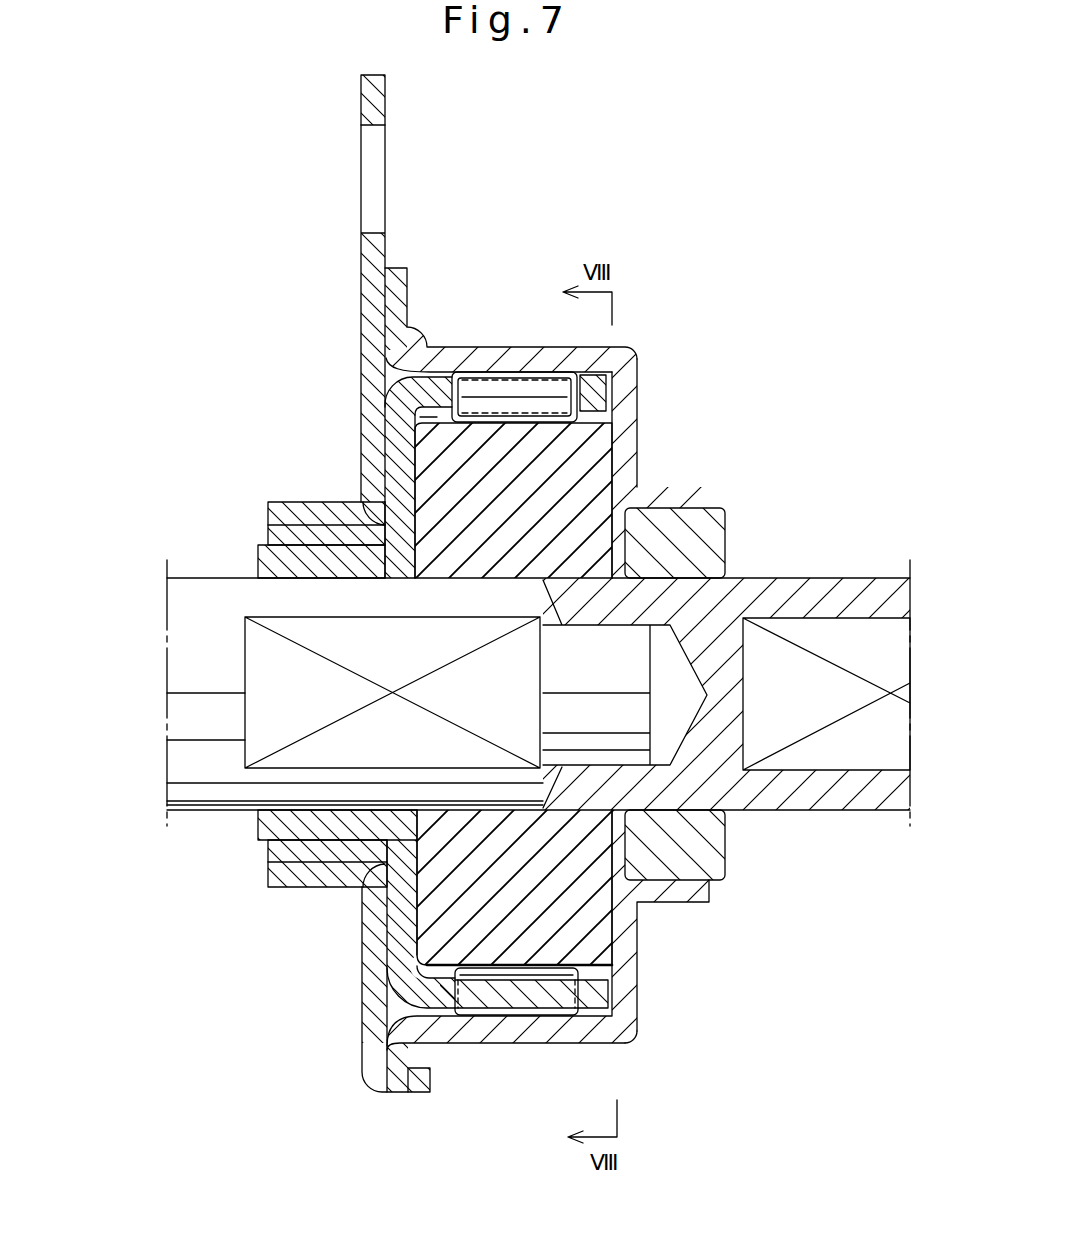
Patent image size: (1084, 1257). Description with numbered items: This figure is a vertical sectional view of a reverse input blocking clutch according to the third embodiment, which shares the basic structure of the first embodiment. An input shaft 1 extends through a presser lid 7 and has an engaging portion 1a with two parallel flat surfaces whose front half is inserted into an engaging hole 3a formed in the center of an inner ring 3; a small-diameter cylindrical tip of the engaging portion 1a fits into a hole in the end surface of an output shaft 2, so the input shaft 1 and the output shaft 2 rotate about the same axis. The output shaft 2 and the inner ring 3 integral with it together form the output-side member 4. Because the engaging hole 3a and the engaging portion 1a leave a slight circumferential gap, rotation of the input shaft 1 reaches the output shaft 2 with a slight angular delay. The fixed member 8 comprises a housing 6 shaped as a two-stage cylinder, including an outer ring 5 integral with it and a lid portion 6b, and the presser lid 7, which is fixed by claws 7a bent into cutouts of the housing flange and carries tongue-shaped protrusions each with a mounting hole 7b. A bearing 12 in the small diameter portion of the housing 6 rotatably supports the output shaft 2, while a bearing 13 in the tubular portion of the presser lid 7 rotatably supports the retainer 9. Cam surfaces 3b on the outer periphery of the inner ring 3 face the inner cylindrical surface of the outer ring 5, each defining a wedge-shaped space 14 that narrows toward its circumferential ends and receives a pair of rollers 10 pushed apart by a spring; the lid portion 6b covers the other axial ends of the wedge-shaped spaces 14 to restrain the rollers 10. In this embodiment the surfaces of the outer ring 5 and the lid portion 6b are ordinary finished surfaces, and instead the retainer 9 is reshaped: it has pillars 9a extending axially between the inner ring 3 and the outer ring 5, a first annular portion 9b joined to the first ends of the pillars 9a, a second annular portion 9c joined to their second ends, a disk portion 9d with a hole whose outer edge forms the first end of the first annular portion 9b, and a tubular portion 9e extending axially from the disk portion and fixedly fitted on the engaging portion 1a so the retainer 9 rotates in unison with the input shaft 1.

The input shaft 1 is at (215, 605).
The engaging portion 1a is at (275, 712).
The output shaft 2 is at (807, 793).
The inner ring 3 is at (575, 932).
The engaging hole 3a is at (363, 500).
The cam surfaces 3b is at (622, 1040).
The output-side member 4 is at (662, 718).
The outer ring 5 is at (520, 1028).
The housing 6 is at (483, 332).
The lid portion 6b is at (626, 430).
The presser lid 7 is at (401, 113).
The claws 7a is at (418, 1082).
The mounting hole 7b is at (363, 143).
The fixed member 8 is at (535, 583).
The retainer 9 is at (399, 1018).
The pillars 9a is at (488, 992).
The first annular portion 9b is at (438, 390).
The second annular portion 9c is at (606, 386).
The disk portion 9d is at (400, 453).
The tubular portion 9e is at (308, 504).
The rollers 10 is at (507, 390).
The bearing 12 is at (690, 540).
The bearing 13 is at (295, 535).
The wedge-shaped space 14 is at (435, 417).